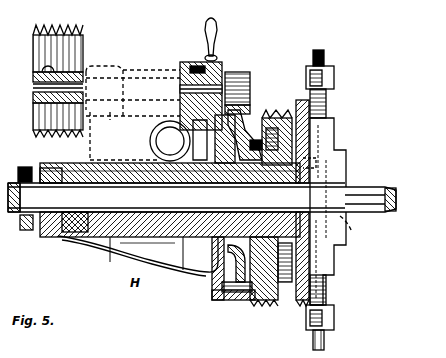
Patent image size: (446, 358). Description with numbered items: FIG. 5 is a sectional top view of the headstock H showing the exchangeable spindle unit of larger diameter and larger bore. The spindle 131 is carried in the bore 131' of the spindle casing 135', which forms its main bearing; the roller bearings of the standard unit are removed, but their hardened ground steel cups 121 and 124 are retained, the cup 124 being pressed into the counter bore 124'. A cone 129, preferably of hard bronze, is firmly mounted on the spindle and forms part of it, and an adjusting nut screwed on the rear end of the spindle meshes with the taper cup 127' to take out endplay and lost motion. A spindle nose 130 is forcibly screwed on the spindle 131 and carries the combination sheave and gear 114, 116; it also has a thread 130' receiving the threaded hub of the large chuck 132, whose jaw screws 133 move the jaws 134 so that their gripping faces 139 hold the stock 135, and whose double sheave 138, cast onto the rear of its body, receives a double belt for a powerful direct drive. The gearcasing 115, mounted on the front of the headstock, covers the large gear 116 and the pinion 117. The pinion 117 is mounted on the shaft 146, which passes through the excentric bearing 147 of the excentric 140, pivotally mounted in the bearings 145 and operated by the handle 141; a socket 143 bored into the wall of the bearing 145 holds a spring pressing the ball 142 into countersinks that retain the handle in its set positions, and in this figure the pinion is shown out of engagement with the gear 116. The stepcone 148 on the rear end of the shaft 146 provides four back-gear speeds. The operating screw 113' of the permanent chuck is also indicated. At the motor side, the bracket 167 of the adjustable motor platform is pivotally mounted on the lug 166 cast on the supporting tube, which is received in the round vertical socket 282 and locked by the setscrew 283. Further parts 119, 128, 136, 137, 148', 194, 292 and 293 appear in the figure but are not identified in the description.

The operating screw 113' is at (19, 149).
The combination sheave 114 is at (250, 256).
The gearcasing 115 is at (250, 293).
The large gear 116 is at (232, 296).
The pinion 117 is at (242, 74).
The shaft 119 is at (176, 197).
The cup 121 is at (246, 116).
The cup 124 is at (58, 164).
The counter bore 124' is at (32, 195).
The taper cup 127' is at (44, 219).
The collar 128 is at (20, 168).
The cone 129 is at (240, 176).
The spindle nose 130 is at (283, 203).
The thread 130' is at (322, 165).
The spindle 131 is at (160, 244).
The bore 131' is at (180, 261).
The large chuck 132 is at (305, 84).
The jaw screws 133 is at (322, 106).
The jaws 134 is at (334, 135).
The stock 135 is at (372, 189).
The spindle casing 135' is at (147, 245).
The washer 136 is at (330, 70).
The nut 137 is at (313, 54).
The double sheave 138 is at (287, 290).
The gripping faces 139 is at (348, 208).
The excentric 140 is at (118, 58).
The handle 141 is at (205, 30).
The ball 142 is at (214, 58).
The socket 143 is at (186, 74).
The bearings 145 is at (154, 140).
The shaft 146 is at (36, 100).
The excentric bearing 147 is at (138, 116).
The stepcone 148 is at (41, 48).
The gear hub 148' is at (41, 84).
The lug 166 is at (108, 354).
The bracket 167 is at (61, 354).
The gear 194 is at (6, 126).
The vertical socket 282 is at (140, 155).
The setscrew 283 is at (192, 139).
The plate 292 is at (208, 273).
The gear 293 is at (272, 137).